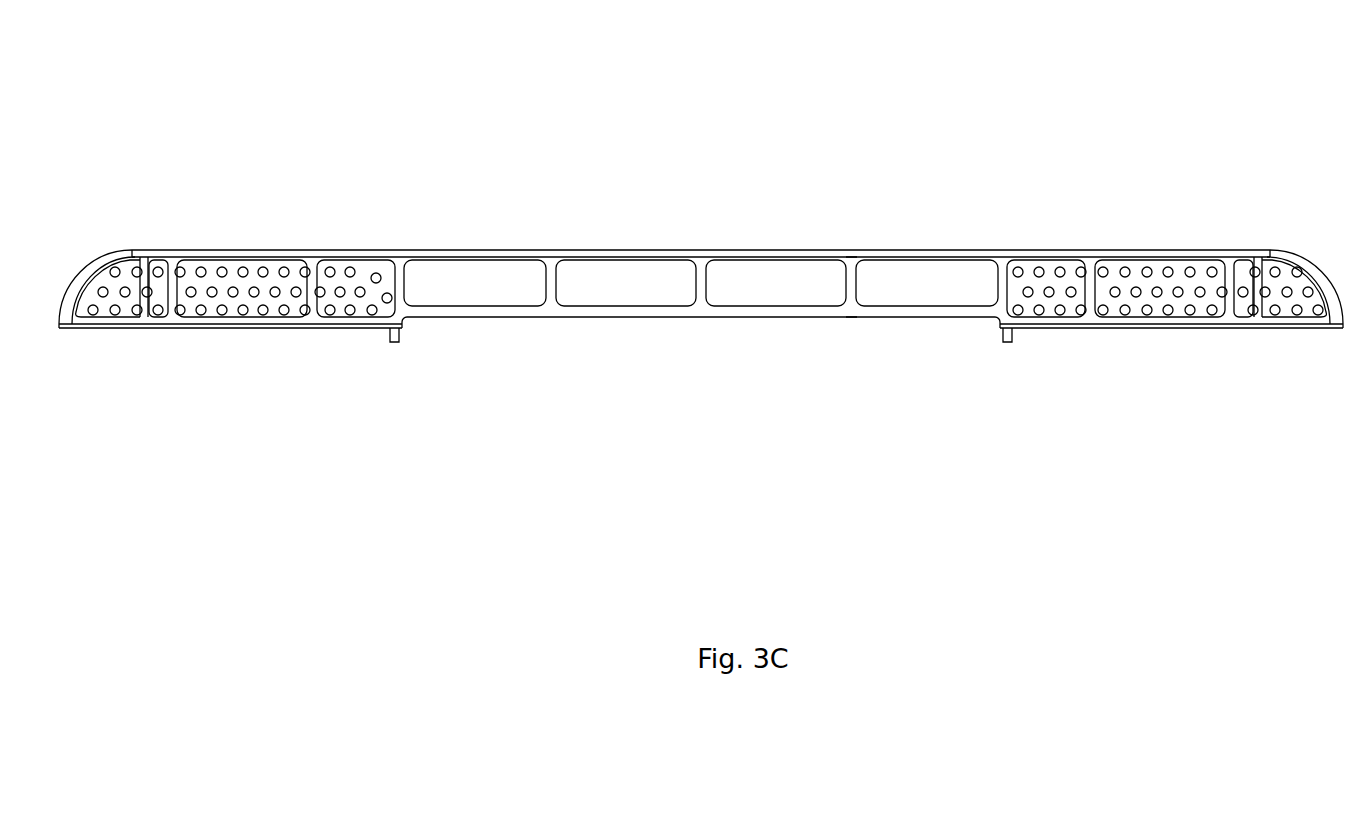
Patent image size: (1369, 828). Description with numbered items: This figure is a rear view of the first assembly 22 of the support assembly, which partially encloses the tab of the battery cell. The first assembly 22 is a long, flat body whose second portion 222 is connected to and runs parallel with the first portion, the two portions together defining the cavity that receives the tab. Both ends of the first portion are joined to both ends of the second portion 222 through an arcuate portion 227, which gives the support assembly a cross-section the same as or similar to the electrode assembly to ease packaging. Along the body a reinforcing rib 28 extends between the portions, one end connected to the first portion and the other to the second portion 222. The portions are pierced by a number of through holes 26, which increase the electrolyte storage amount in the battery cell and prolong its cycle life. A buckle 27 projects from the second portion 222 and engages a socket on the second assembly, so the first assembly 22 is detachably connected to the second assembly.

The first assembly 22 is at (627, 226).
The through hole 26 is at (1147, 272).
The buckle 27 is at (396, 345).
The reinforcing rib 28 is at (853, 283).
The second portion 222 is at (774, 307).
The arcuate portion 227 is at (1328, 278).